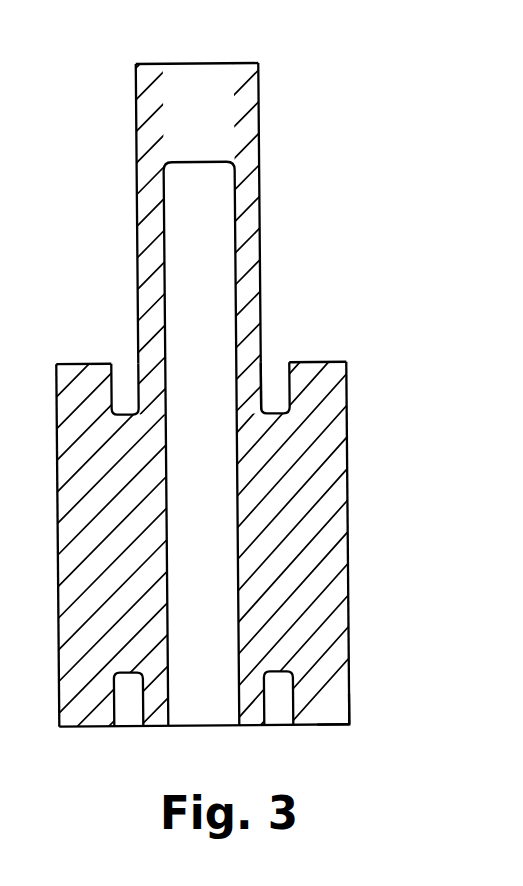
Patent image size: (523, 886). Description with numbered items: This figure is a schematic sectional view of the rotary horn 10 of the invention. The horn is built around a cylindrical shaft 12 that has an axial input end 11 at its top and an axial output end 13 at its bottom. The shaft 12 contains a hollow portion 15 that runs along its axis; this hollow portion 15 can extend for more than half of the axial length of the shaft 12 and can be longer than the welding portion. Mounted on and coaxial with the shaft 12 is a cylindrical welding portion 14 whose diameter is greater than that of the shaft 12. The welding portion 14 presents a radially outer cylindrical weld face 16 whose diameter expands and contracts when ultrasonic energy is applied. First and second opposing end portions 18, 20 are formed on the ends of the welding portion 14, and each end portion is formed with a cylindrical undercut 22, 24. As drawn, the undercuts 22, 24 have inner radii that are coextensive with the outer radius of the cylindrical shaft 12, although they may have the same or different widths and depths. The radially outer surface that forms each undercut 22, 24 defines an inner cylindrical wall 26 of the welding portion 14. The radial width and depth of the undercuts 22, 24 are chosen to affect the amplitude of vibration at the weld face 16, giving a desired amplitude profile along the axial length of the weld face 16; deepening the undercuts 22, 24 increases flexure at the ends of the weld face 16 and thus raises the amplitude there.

The rotary horn 10 is at (261, 395).
The axial input end 11 is at (203, 63).
The cylindrical shaft 12 is at (261, 210).
The axial output end 13 is at (155, 728).
The cylindrical welding portion 14 is at (261, 535).
The hollow portion 15 is at (168, 656).
The weld face 16 is at (348, 561).
The first end portion 18 is at (338, 728).
The second end portion 20 is at (305, 362).
The first cylindrical undercut 22 is at (290, 686).
The cylindrical undercut 24 is at (288, 392).
The inner cylindrical wall 26 is at (262, 389).